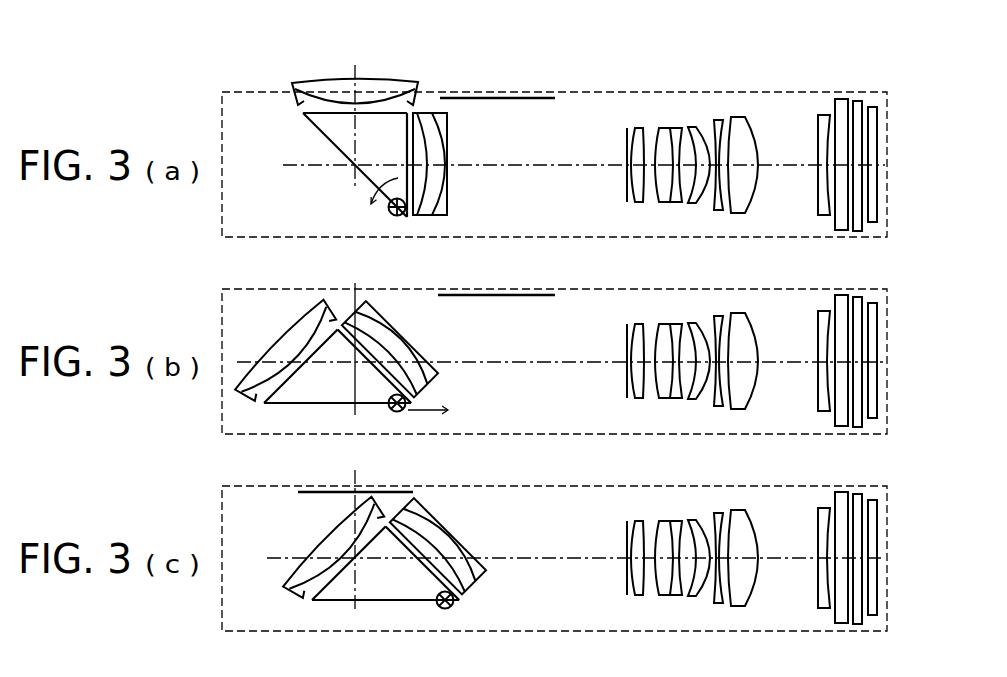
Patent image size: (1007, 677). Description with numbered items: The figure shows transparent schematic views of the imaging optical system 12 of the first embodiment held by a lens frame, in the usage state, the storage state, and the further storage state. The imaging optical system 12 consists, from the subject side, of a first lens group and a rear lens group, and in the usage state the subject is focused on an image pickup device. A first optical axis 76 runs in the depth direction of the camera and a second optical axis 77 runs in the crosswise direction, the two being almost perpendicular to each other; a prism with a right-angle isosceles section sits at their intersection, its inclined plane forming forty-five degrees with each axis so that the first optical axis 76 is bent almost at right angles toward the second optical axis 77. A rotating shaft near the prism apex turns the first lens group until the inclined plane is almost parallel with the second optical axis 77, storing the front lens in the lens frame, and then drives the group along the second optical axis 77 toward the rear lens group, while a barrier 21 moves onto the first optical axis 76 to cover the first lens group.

The imaging optical system 12 is at (276, 46).
The barrier 21 is at (525, 96).
The first optical axis 76 is at (354, 124).
The second optical axis 77 is at (532, 168).